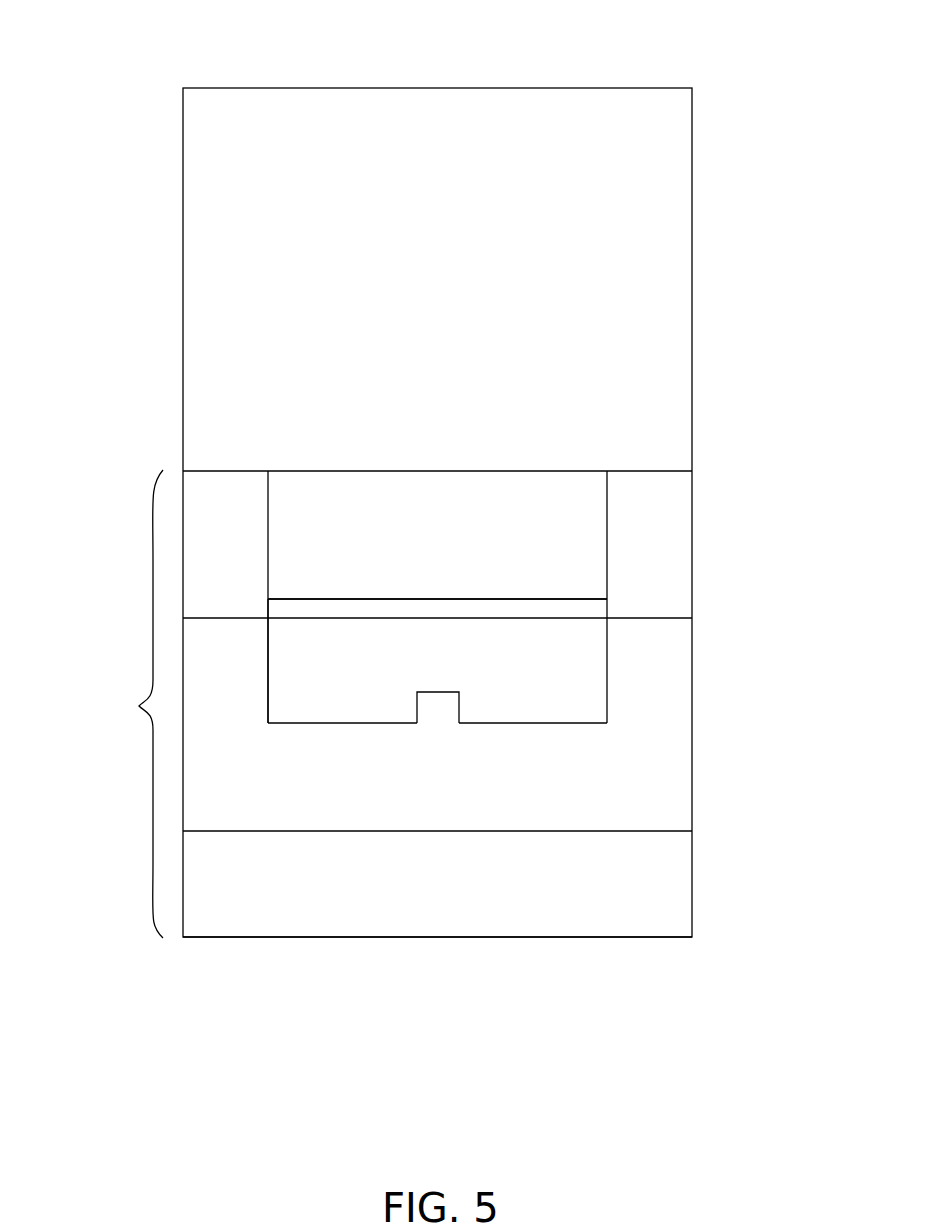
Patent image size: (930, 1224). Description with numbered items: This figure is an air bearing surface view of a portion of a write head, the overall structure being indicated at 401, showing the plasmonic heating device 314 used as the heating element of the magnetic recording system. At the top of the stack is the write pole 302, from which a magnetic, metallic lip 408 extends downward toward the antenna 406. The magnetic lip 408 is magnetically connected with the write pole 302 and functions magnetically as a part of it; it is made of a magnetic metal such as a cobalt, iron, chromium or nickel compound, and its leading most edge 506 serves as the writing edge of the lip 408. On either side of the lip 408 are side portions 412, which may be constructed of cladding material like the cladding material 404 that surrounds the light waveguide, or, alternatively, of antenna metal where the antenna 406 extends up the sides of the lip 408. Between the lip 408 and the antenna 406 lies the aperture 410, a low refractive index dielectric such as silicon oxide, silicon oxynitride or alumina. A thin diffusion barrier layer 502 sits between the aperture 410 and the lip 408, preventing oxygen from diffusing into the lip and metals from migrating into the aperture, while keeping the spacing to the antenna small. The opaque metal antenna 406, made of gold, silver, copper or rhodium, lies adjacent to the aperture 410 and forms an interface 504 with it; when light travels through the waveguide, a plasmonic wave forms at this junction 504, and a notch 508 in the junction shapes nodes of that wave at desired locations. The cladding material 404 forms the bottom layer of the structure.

The memory device / structure 401 is at (438, 90).
The write pole 302 is at (504, 274).
The plasmonic heating device 314 is at (152, 535).
The side portions 412 is at (215, 509).
The magnetic lip 408 is at (503, 536).
The diffusion barrier layer 502 is at (585, 608).
The aperture 410 is at (440, 640).
The leading most edge 506 is at (343, 599).
The notch 508 is at (460, 710).
The interface 504 is at (563, 723).
The antenna 406 is at (500, 767).
The cladding material 404 is at (510, 874).